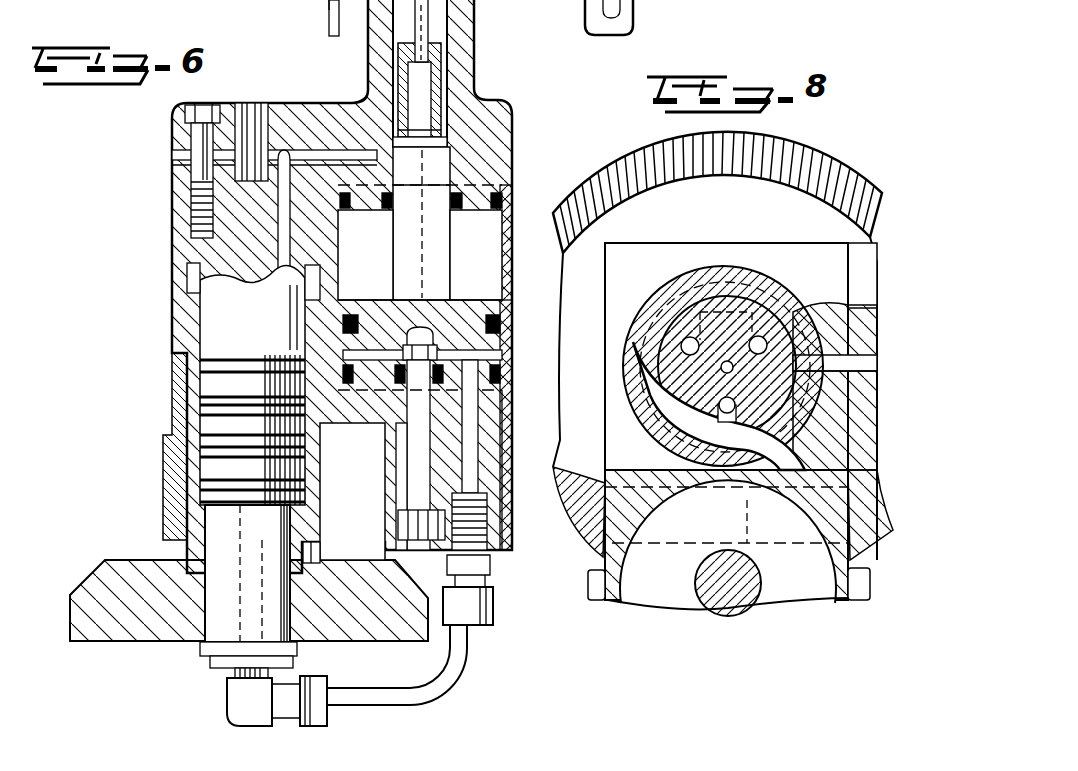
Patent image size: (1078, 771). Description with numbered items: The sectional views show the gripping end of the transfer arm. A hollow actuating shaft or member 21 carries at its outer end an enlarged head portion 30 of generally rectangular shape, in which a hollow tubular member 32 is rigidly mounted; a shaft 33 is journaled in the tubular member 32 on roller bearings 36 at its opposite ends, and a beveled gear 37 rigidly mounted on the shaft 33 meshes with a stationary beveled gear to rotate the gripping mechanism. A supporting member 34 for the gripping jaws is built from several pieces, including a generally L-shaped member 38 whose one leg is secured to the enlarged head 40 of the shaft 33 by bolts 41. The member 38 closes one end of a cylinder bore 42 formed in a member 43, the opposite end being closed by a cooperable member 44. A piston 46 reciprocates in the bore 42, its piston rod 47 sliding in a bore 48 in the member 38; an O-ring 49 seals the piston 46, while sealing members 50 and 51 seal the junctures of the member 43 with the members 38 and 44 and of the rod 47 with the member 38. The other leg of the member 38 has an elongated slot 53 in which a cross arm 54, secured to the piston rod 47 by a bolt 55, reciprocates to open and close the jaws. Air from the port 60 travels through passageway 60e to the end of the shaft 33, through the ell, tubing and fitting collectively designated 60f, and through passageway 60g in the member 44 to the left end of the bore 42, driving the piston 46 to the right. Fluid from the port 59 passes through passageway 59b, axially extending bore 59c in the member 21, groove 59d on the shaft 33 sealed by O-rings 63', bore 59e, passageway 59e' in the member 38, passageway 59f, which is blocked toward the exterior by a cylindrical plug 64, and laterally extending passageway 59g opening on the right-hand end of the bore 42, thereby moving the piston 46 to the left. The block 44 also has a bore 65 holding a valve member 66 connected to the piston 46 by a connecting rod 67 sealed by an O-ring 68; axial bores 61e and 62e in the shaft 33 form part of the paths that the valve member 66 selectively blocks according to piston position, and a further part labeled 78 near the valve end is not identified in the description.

In FIG. 8, the hollow actuating shaft 21 is at (860, 280).
In FIG. 6, the enlarged head portion 30 is at (165, 450).
In FIG. 8, the enlarged head portion 30 is at (747, 243).
In FIG. 8, the hollow tubular member 32 is at (640, 347).
In FIG. 6, the shaft 33 is at (223, 580).
In FIG. 8, the shaft 33 is at (705, 318).
In FIG. 6, the supporting member 34 is at (518, 313).
In FIG. 6, the roller bearings 36 is at (188, 283).
In FIG. 6, the beveled gear 37 is at (125, 573).
In FIG. 8, the beveled gear 37 is at (800, 162).
In FIG. 6, the L-shaped member 38 is at (355, 100).
In FIG. 6, the enlarged head 40 is at (183, 222).
In FIG. 6, the bolts 41 is at (202, 105).
In FIG. 6, the cylinder bore 42 is at (512, 222).
In FIG. 8, the cylinder bore 42 is at (835, 572).
In FIG. 6, the member 43 is at (512, 200).
In FIG. 8, the member 43 is at (867, 488).
In FIG. 6, the cooperable member 44 is at (518, 425).
In FIG. 8, the cooperable member 44 is at (726, 541).
In FIG. 6, the piston 46 is at (372, 320).
In FIG. 8, the piston 46 is at (655, 593).
In FIG. 6, the piston rod 47 is at (390, 252).
In FIG. 8, the piston rod 47 is at (725, 597).
In FIG. 6, the bore 48 is at (412, 174).
In FIG. 6, the O-ring 49 is at (494, 316).
In FIG. 6, the sealing members 50 is at (511, 235).
In FIG. 6, the sealing member 51 is at (390, 200).
In FIG. 6, the elongated slot 53 is at (432, 35).
In FIG. 6, the cross arm 54 is at (370, 72).
In FIG. 6, the bolt 55 is at (435, 86).
In FIG. 6, the port 59 is at (360, 36).
In FIG. 6, the passageway 59b is at (329, 4).
In FIG. 8, the axially extending bore 59c is at (860, 362).
In FIG. 8, the groove 59d is at (857, 392).
In FIG. 8, the axially extending bore 59e is at (710, 406).
In FIG. 6, the passageway 59e' is at (252, 385).
In FIG. 6, the passageway 59f is at (307, 150).
In FIG. 6, the laterally extending passageway 59g is at (365, 255).
In FIG. 6, the port 60 is at (368, 48).
In FIG. 6, the passageway 60e is at (292, 605).
In FIG. 8, the passageway 60e is at (719, 371).
In FIG. 6, the fluid conducting tube 60f is at (437, 687).
In FIG. 6, the passageway 60g is at (465, 472).
In FIG. 8, the axially extending bore 61e is at (689, 337).
In FIG. 8, the axially extending bore 62e is at (763, 337).
In FIG. 6, the O-rings 63' is at (200, 430).
In FIG. 6, the cylindrical pin or plug 64 is at (248, 110).
In FIG. 6, the bore 65 is at (400, 462).
In FIG. 6, the valve member 66 is at (430, 550).
In FIG. 6, the connecting rod 67 is at (410, 483).
In FIG. 6, the O-ring 68 is at (402, 384).
In FIG. 6, the nut 78 is at (403, 525).